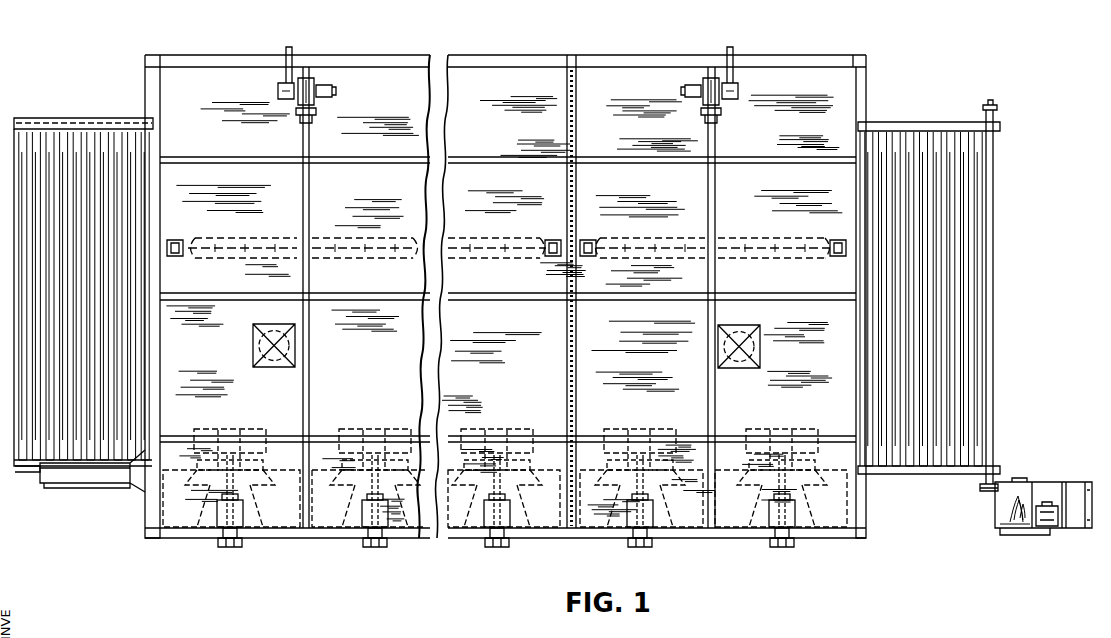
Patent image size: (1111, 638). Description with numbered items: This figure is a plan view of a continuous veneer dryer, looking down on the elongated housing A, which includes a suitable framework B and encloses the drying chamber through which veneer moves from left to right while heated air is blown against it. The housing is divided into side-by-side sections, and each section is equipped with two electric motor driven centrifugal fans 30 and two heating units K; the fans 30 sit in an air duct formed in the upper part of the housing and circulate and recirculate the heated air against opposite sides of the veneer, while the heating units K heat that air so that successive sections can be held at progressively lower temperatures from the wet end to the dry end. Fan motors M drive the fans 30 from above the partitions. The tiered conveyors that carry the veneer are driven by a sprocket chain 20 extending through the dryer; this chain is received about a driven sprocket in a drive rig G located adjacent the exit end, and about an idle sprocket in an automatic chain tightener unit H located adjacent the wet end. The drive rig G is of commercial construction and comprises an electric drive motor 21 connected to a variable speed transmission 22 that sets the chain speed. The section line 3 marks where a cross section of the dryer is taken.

The housing A is at (870, 97).
The framework B is at (497, 304).
The heating unit K is at (323, 238).
The motor M is at (253, 345).
The automatic chain tightener unit H is at (95, 478).
The electric motor driven centrifugal fan 30 is at (232, 429).
The sprocket chain 20 is at (915, 474).
The drive rig G is at (995, 516).
The variable speed transmission 22 is at (1023, 496).
The electric drive motor 21 is at (1058, 518).
The section line 3- 3 is at (417, 572).